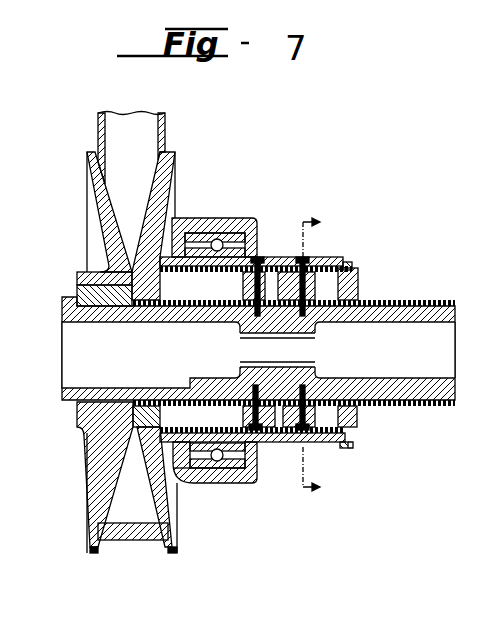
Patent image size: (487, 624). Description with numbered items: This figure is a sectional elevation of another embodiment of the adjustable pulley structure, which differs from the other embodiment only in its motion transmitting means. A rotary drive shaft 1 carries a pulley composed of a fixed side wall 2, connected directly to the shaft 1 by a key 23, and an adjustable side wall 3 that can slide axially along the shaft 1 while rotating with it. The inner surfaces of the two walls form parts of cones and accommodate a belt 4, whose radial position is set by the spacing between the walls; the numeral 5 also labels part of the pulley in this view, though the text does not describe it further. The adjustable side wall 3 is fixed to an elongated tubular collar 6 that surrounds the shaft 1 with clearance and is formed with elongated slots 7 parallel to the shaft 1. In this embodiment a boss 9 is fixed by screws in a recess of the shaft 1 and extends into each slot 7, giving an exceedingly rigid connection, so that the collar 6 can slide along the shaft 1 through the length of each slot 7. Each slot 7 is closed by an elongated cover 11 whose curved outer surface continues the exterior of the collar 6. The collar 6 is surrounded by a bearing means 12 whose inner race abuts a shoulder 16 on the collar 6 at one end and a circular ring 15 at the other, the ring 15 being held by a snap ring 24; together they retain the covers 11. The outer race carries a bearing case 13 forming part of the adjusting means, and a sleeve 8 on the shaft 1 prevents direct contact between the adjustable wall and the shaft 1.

The rotary drive shaft 1 is at (444, 373).
The fixed side wall 2 is at (91, 555).
The adjustable side wall 3 is at (177, 531).
The belt 4 is at (100, 126).
The pulley 5 is at (140, 508).
The tubular collar 6 is at (345, 421).
The slot 7 is at (350, 269).
The sleeve 8 is at (437, 407).
The boss 9 is at (322, 296).
The cover 11 is at (311, 258).
The bearing means 12 is at (236, 221).
The bearing case 13 is at (181, 222).
The circular ring 15 is at (290, 258).
The shoulder 16 is at (188, 483).
The key 23 is at (78, 292).
The snap ring 24 is at (348, 449).